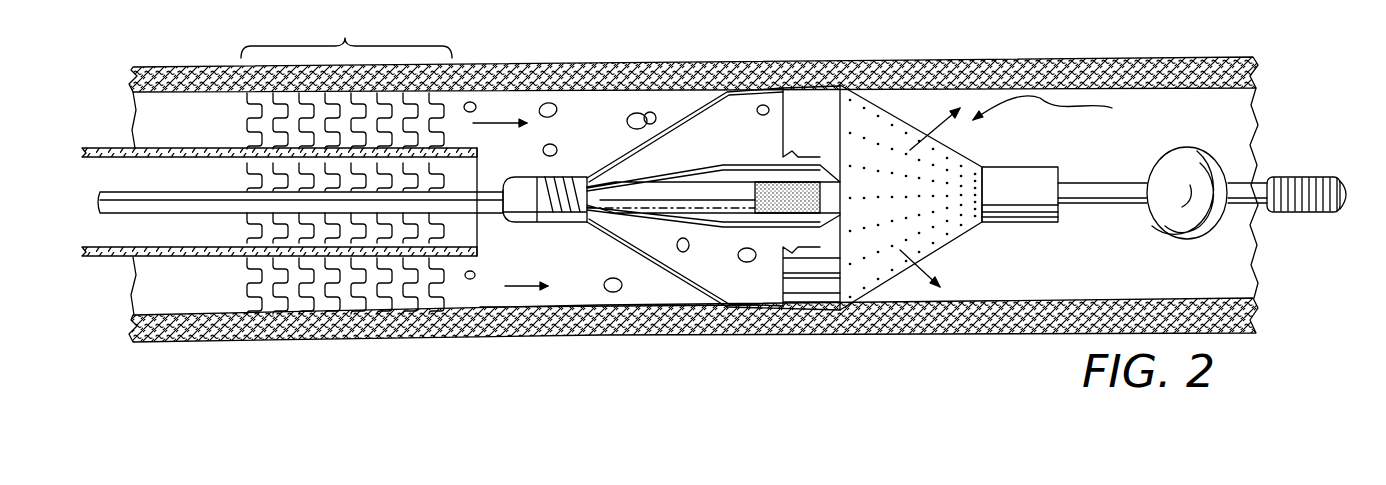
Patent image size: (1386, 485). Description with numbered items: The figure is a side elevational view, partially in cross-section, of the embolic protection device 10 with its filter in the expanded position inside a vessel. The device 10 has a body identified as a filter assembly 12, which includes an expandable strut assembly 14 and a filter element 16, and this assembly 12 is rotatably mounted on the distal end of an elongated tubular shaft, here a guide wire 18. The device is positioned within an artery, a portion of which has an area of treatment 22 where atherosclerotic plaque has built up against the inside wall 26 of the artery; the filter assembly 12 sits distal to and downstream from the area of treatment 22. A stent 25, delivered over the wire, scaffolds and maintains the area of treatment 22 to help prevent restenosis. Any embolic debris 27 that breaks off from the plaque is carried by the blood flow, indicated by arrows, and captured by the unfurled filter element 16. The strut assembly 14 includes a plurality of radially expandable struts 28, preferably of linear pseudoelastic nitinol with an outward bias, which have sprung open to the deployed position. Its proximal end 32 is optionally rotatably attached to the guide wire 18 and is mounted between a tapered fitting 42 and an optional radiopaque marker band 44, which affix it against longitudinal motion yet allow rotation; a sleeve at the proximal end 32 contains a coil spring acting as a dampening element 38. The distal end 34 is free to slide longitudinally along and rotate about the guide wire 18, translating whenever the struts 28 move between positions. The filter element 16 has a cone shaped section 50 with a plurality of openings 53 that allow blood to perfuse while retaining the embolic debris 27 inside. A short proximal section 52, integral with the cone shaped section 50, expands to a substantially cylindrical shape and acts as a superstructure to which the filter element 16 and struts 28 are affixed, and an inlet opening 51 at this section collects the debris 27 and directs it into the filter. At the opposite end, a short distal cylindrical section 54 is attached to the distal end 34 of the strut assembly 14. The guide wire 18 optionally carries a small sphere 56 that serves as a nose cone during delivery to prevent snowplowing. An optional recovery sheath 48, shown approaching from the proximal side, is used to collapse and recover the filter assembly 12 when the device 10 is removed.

The embolic protection device 10 is at (1056, 106).
The filter assembly 12 is at (682, 288).
The expandable strut assembly 14 is at (733, 311).
The filter element 16 is at (880, 125).
The guide wire 18 is at (125, 210).
The area of treatment 22 is at (346, 202).
The stent 25 is at (283, 302).
The inside wall 26 is at (540, 307).
The embolic debris 27 is at (635, 115).
The struts 28 is at (760, 165).
The proximal end 32 is at (517, 222).
The distal end 34 is at (1042, 187).
The dampening element 38 is at (560, 186).
The tapered fitting 42 is at (527, 180).
The radiopaque marker band 44 is at (600, 190).
The recovery sheath 48 is at (208, 257).
The cone shaped section 50 is at (865, 287).
The inlet opening 51 is at (775, 98).
The short proximal section 52 is at (823, 311).
The openings 53 is at (893, 273).
The short distal cylindrical section 54 is at (1007, 218).
The small sphere 56 is at (1190, 165).